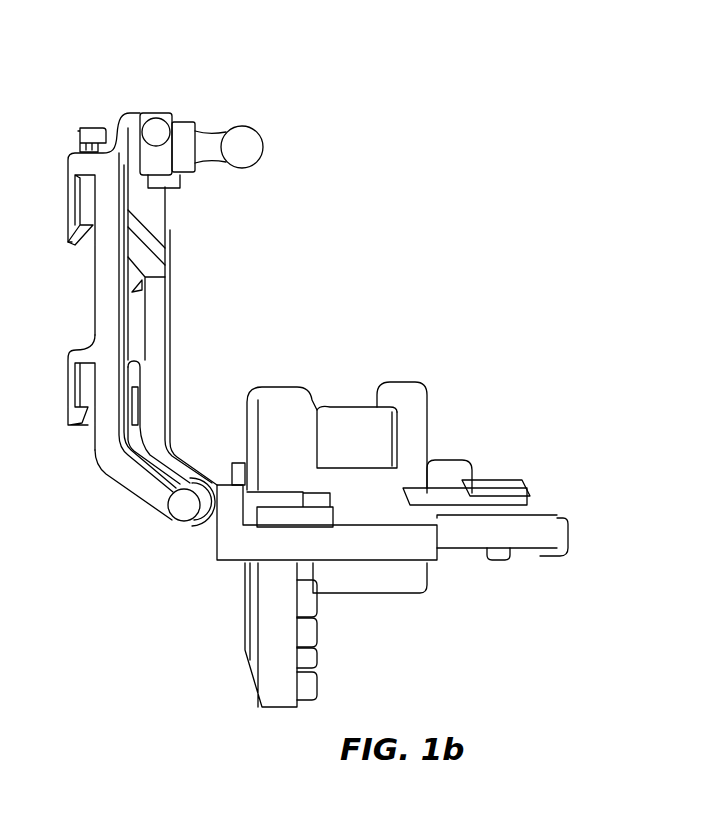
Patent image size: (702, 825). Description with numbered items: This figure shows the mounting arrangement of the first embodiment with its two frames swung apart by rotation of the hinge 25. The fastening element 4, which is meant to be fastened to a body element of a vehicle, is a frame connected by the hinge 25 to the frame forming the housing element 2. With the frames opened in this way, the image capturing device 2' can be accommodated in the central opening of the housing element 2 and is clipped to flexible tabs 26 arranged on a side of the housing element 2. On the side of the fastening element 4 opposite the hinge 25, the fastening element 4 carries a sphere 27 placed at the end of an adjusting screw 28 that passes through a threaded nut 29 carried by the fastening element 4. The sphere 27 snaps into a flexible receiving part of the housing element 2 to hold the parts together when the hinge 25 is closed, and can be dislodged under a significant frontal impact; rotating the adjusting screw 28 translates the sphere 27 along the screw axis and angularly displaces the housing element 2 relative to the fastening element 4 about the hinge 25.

The housing element 2 is at (392, 521).
The image capturing device 2' is at (315, 636).
The fastening element 4 is at (123, 485).
The hinge 25 is at (198, 548).
The flexible tabs 26 is at (233, 463).
The sphere 27 is at (247, 152).
The adjusting screw 28 is at (95, 132).
The threaded nut 29 is at (187, 118).